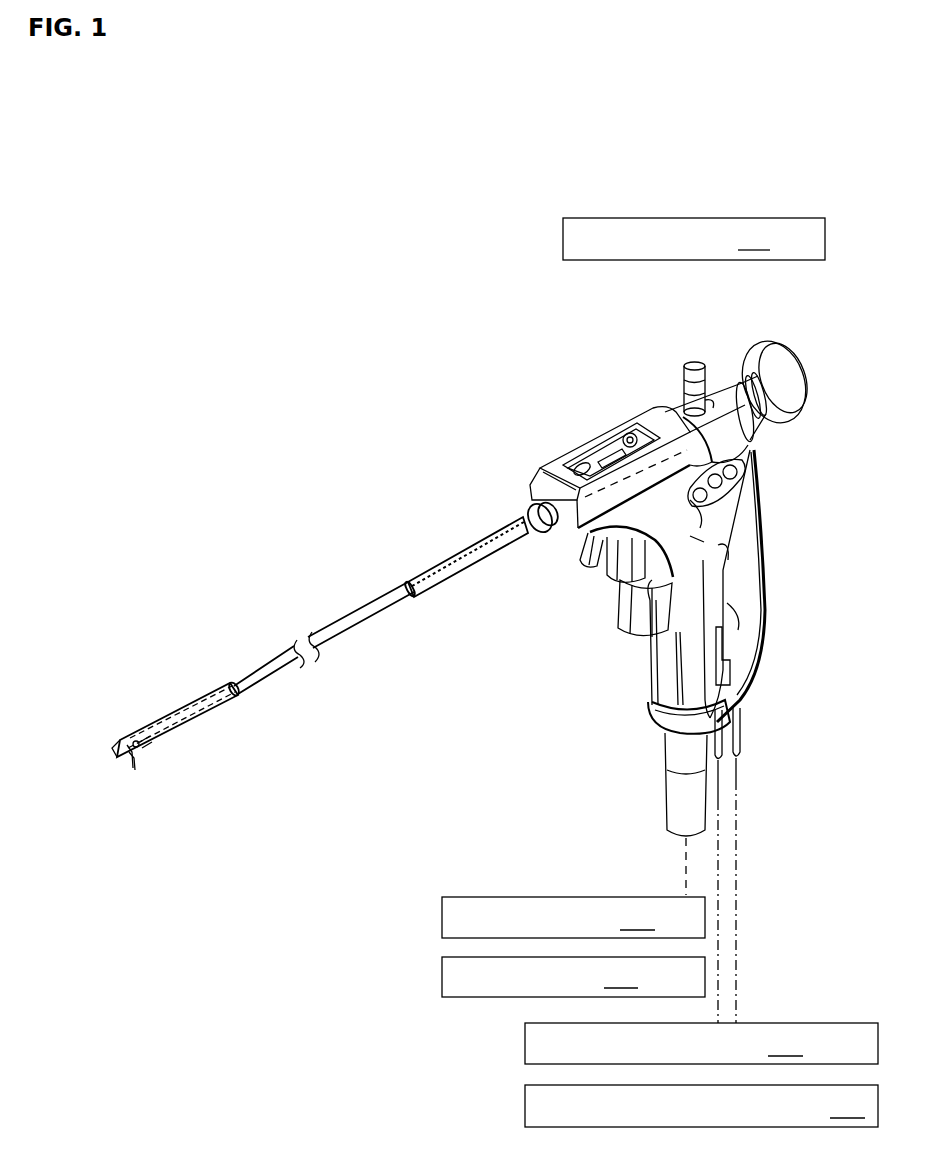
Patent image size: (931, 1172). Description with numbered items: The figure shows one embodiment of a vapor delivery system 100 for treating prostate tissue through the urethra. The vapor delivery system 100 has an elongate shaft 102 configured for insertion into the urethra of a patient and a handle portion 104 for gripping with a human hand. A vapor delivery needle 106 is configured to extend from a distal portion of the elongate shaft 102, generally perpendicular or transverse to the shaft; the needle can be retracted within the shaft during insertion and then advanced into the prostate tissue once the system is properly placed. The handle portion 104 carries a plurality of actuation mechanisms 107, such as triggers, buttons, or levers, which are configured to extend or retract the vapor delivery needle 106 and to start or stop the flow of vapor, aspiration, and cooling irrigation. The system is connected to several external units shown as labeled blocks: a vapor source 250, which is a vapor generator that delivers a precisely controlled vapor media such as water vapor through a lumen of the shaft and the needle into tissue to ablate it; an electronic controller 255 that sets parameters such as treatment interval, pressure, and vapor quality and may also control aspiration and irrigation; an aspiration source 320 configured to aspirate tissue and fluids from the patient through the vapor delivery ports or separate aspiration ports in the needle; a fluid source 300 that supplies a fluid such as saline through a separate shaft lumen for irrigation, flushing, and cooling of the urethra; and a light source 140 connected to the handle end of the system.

The vapor delivery system 100 is at (365, 378).
The elongate shaft 102 is at (260, 665).
The handle portion 104 is at (767, 587).
The vapor delivery needle 106 is at (137, 767).
The actuation mechanisms 107 is at (605, 590).
The light source 140 is at (694, 357).
The vapor source 250 is at (686, 957).
The controller 255 is at (573, 977).
The aspiration source 320 is at (736, 1085).
The fluid source 300 is at (701, 1106).